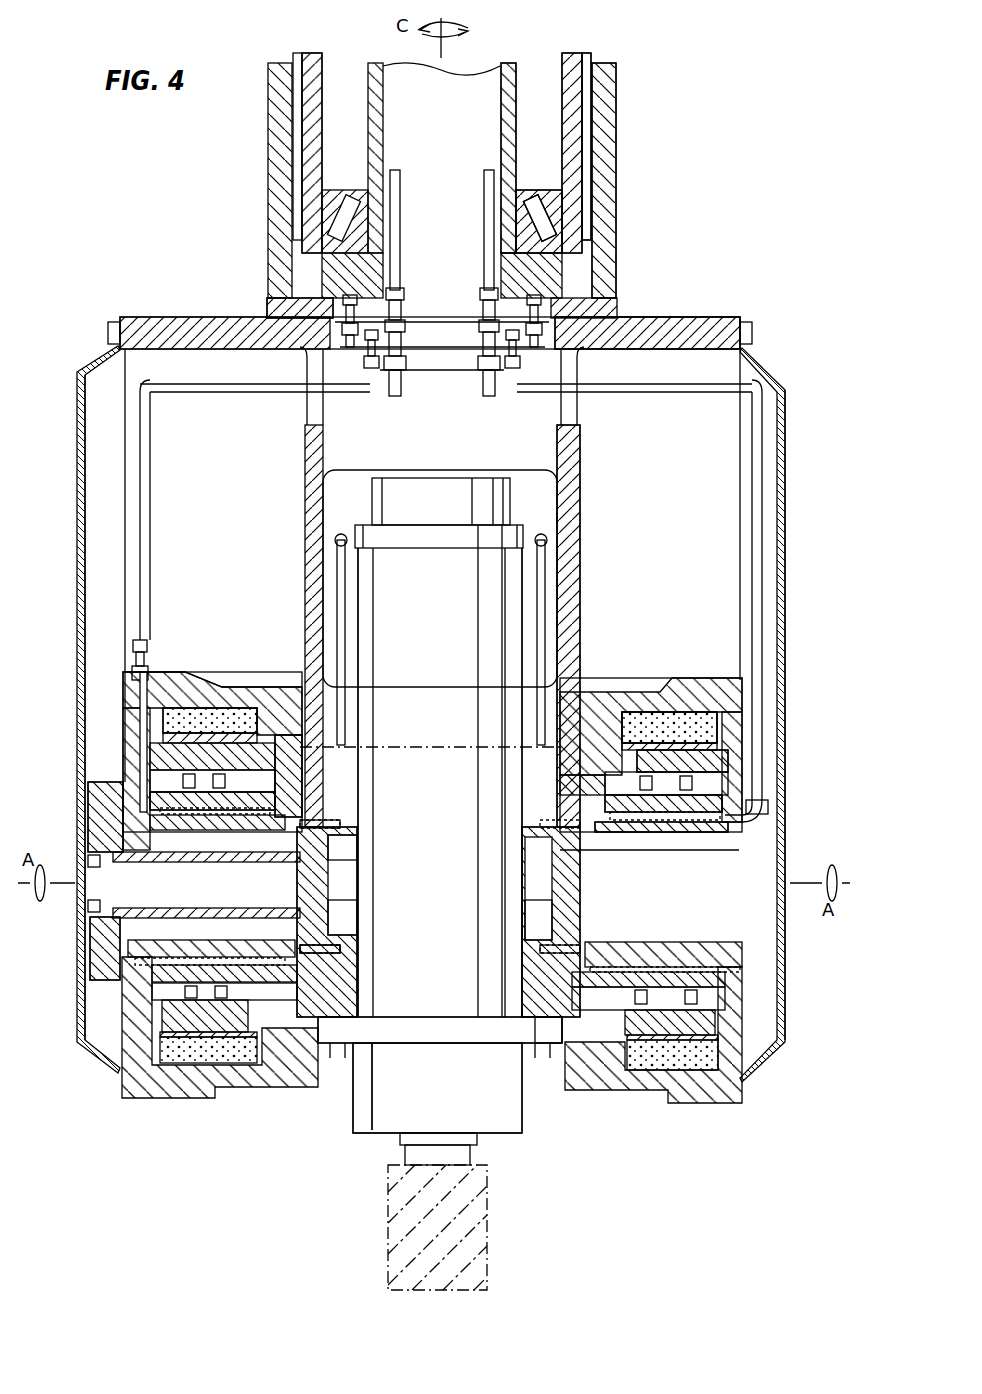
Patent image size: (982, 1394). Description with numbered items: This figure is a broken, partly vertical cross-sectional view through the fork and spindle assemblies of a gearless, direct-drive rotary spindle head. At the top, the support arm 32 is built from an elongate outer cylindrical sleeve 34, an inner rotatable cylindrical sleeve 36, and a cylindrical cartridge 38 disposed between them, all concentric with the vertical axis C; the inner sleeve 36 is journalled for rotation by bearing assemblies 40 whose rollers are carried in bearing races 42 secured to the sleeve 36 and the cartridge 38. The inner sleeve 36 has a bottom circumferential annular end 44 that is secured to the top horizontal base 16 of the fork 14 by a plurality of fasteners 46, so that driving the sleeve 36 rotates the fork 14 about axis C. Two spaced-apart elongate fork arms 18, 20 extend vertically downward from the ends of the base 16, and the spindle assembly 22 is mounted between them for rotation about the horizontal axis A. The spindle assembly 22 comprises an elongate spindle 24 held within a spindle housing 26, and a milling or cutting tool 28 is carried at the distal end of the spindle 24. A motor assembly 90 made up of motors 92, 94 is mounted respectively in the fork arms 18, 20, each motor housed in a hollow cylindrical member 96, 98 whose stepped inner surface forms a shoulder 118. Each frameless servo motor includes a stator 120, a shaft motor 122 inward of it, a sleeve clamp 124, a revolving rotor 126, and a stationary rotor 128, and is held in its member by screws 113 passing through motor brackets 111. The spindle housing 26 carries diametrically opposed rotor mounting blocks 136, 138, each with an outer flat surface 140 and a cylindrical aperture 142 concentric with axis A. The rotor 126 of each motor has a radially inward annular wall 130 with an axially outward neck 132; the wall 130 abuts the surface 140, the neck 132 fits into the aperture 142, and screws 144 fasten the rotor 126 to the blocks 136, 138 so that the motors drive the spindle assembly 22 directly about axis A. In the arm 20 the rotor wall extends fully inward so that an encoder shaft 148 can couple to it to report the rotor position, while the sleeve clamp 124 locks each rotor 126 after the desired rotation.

The fork 14 is at (700, 318).
The top horizontal base 16 is at (640, 318).
The fork arm 18 is at (787, 432).
The fork arm 20 is at (82, 382).
The spindle assembly 22 is at (344, 1084).
The spindle 24 is at (352, 1125).
The spindle housing 26 is at (482, 745).
The milling or cutting tool 28 is at (487, 1222).
The support arm 32 is at (620, 88).
The outer cylindrical sleeve 34 is at (615, 140).
The inner rotatable cylindrical sleeve 36 is at (590, 102).
The cylindrical cartridge 38 is at (585, 175).
The bearing assembly 40 is at (560, 232).
The bearing race 42 is at (575, 210).
The bottom circumferential annular end 44 is at (330, 332).
The fasteners 46 is at (312, 282).
The motor assembly 90 is at (188, 700).
The motor 92 is at (682, 712).
The motor 94 is at (208, 700).
The hollow cylindrical member 96 is at (640, 692).
The hollow cylindrical member 98 is at (247, 678).
The motor bracket 111 is at (283, 722).
The screws 113 is at (288, 722).
The shoulder 118 is at (578, 700).
The stator 120 is at (710, 725).
The shaft motor 122 is at (725, 770).
The sleeve clamp 124 is at (720, 797).
The revolving rotor 126 is at (750, 836).
The stationary rotor 128 is at (697, 842).
The annular wall 130 is at (352, 943).
The neck 132 is at (350, 925).
The rotor mounting block 136 is at (536, 1030).
The rotor mounting block 138 is at (392, 1040).
The outer flat surface 140 is at (325, 882).
The cylindrical aperture 142 is at (350, 858).
The screws 144 is at (343, 822).
The encoder shaft 148 is at (128, 880).